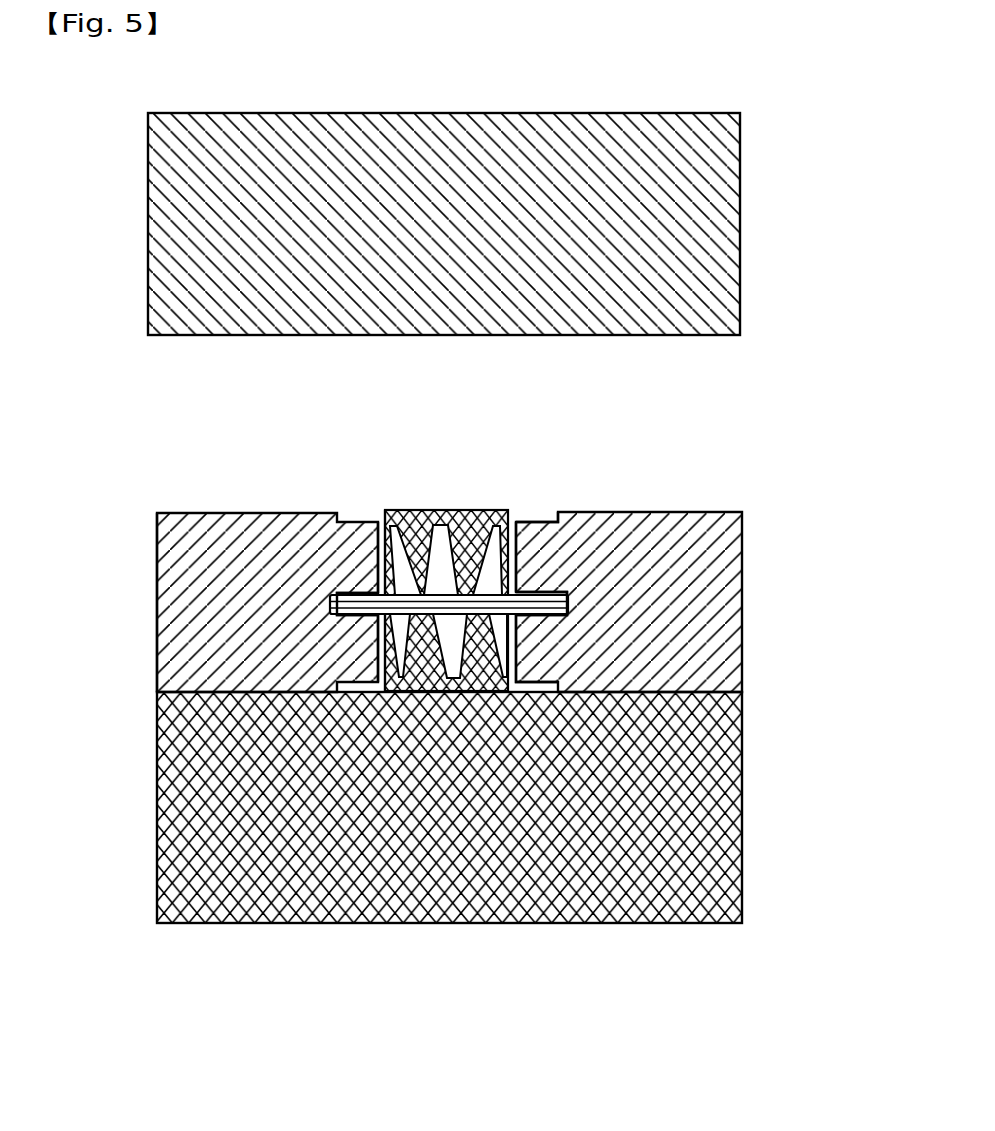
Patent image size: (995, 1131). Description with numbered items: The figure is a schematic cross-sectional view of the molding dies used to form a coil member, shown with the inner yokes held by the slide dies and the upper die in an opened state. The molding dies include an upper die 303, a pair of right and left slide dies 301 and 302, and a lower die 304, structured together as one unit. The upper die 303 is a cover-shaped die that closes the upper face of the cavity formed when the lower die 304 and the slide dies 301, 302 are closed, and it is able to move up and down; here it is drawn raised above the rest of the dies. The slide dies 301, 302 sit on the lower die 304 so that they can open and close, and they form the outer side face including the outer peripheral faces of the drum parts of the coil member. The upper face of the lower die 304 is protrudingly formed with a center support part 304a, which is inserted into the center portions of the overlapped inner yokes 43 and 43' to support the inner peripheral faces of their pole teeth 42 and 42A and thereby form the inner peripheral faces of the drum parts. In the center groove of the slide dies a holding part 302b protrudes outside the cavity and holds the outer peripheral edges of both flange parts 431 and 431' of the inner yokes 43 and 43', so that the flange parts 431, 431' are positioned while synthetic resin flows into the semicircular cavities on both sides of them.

The upper die 303 is at (708, 180).
The lower die 304 is at (723, 793).
The center support part 304a is at (405, 511).
The slide die 302 is at (715, 523).
The slide die 301 is at (157, 610).
The holding part 302b is at (568, 592).
The pole teeth 42 is at (441, 540).
The pole teeth 42A is at (453, 633).
The inner yoke 43 is at (383, 522).
The inner yoke 43' is at (227, 673).
The flange part 431 is at (326, 502).
The flange part 431' is at (242, 770).